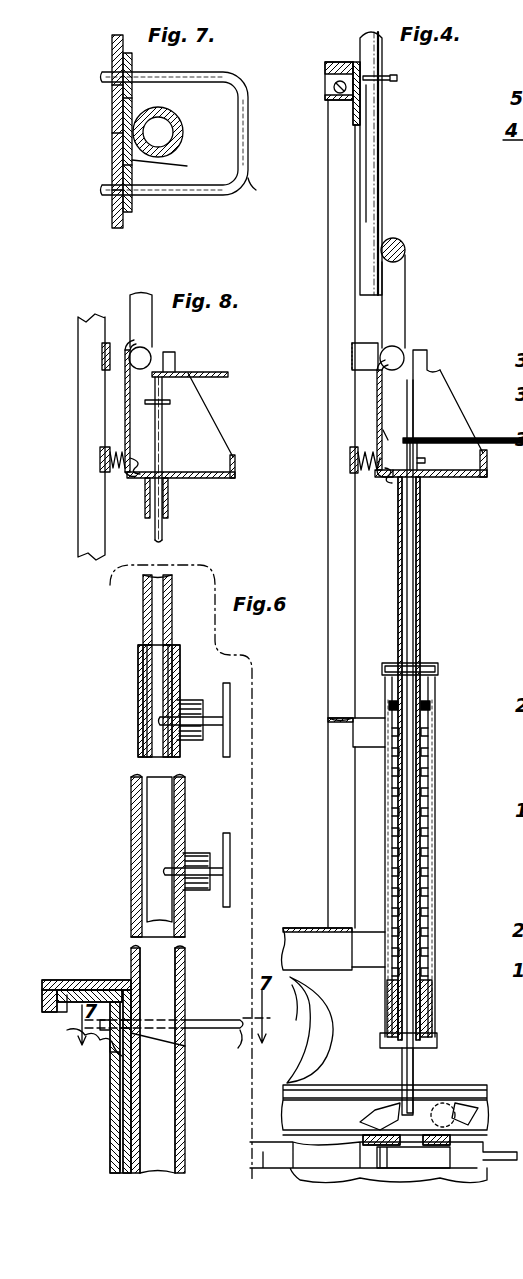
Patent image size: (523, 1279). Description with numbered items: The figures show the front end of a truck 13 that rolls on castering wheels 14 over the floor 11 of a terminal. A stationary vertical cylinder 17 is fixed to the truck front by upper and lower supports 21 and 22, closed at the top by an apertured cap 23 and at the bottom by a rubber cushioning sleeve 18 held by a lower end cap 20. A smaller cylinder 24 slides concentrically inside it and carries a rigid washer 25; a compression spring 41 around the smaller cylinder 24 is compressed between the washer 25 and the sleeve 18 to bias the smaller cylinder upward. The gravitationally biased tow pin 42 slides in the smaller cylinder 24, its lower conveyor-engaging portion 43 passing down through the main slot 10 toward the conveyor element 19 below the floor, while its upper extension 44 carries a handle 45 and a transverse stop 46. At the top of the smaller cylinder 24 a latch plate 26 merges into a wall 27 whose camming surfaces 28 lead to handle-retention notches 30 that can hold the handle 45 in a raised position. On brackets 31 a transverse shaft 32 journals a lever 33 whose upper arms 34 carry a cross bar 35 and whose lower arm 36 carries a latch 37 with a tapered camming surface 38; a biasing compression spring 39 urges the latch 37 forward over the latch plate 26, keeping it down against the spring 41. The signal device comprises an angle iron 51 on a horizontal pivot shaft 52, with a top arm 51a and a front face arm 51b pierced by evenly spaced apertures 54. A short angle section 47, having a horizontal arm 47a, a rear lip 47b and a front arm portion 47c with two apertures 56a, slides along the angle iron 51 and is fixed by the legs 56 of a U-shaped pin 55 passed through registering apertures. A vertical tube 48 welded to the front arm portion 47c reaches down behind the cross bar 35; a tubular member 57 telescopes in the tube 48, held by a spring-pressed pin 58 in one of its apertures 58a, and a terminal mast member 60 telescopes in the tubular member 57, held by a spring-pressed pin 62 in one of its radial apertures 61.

In FIG. 4, the main slot 10 is at (440, 1078).
In FIG. 4, the floor 11 is at (478, 1085).
In FIG. 4, the truck 13 is at (311, 926).
In FIG. 4, the castering wheels 14 is at (320, 1010).
In FIG. 4, the stationary vertical cylinder 17 is at (435, 885).
In FIG. 4, the cushioning sleeve 18 is at (435, 1010).
In FIG. 4, the cross member 19 is at (413, 1158).
In FIG. 8, the lower end cap 20 is at (214, 425).
In FIG. 4, the lower end cap 20 is at (437, 1043).
In FIG. 4, the upper support 21 is at (368, 716).
In FIG. 4, the lower support 22 is at (368, 935).
In FIG. 4, the apertured cap 23 is at (438, 670).
In FIG. 8, the smaller cylinder 24 is at (168, 502).
In FIG. 4, the smaller cylinder 24 is at (420, 600).
In FIG. 4, the rigid washer 25 is at (432, 707).
In FIG. 8, the latch plate 26 is at (228, 478).
In FIG. 4, the latch plate 26 is at (458, 478).
In FIG. 8, the wall 27 is at (235, 468).
In FIG. 4, the wall 27 is at (487, 468).
In FIG. 4, the camming surfaces 28 is at (456, 402).
In FIG. 8, the handle-retention notches 30 is at (178, 376).
In FIG. 4, the handle-retention notches 30 is at (436, 372).
In FIG. 8, the brackets 31 is at (110, 350).
In FIG. 4, the brackets 31 is at (366, 345).
In FIG. 8, the transverse shaft 32 is at (148, 355).
In FIG. 4, the transverse shaft 32 is at (400, 352).
In FIG. 8, the lever 33 is at (125, 416).
In FIG. 4, the lever 33 is at (377, 410).
In FIG. 8, the upper arms 34 is at (148, 310).
In FIG. 4, the upper arms 34 is at (402, 300).
In FIG. 4, the transverse cross bar 35 is at (405, 250).
In FIG. 4, the lower arm 36 is at (377, 432).
In FIG. 8, the latch 37 is at (128, 482).
In FIG. 4, the latch 37 is at (385, 437).
In FIG. 8, the camming surface 38 is at (138, 466).
In FIG. 4, the camming surface 38 is at (388, 480).
In FIG. 8, the biasing compression spring 39 is at (108, 470).
In FIG. 4, the biasing compression spring 39 is at (365, 475).
In FIG. 4, the compression spring 41 is at (435, 768).
In FIG. 8, the tow pin 42 is at (212, 553).
In FIG. 4, the tow pin 42 is at (465, 568).
In FIG. 4, the lower conveyor-engaging portion 43 is at (398, 1100).
In FIG. 8, the upper extension 44 is at (155, 388).
In FIG. 4, the upper extension 44 is at (418, 453).
In FIG. 8, the handle 45 is at (210, 372).
In FIG. 4, the handle 45 is at (462, 440).
In FIG. 8, the stop 46 is at (170, 402).
In FIG. 4, the stop 46 is at (425, 463).
In FIG. 7, the angle section 47 is at (187, 166).
In FIG. 6, the angle section 47 is at (115, 1085).
In FIG. 4, the angle section 47 is at (356, 93).
In FIG. 6, the horizontal arm 47a is at (65, 980).
In FIG. 6, the rear lip 47b is at (65, 1003).
In FIG. 7, the front arm portion 47c is at (132, 110).
In FIG. 6, the front arm portion 47c is at (118, 1130).
In FIG. 7, the vertical tube 48 is at (183, 133).
In FIG. 6, the vertical tube 48 is at (185, 1112).
In FIG. 4, the vertical tube 48 is at (382, 156).
In FIG. 6, the angle iron 51 is at (112, 968).
In FIG. 4, the angle iron 51 is at (340, 70).
In FIG. 6, the top arm 51a is at (85, 1030).
In FIG. 7, the front face arm 51b is at (112, 52).
In FIG. 6, the front face arm 51b is at (112, 1052).
In FIG. 4, the horizontal pivot shaft 52 is at (334, 89).
In FIG. 7, the apertures 54 is at (112, 192).
In FIG. 6, the apertures 54 is at (131, 1012).
In FIG. 7, the U-shaped pin 55 is at (256, 190).
In FIG. 6, the U-shaped pin 55 is at (238, 1048).
In FIG. 4, the U-shaped pin 55 is at (450, 89).
In FIG. 7, the legs 56 is at (195, 192).
In FIG. 6, the legs 56 is at (213, 1010).
In FIG. 7, the apertures 56a is at (132, 166).
In FIG. 6, the apertures 56a is at (198, 1048).
In FIG. 6, the tubular member 57 is at (145, 778).
In FIG. 6, the spring-pressed pin 58 is at (208, 862).
In FIG. 6, the apertures 58a is at (180, 905).
In FIG. 6, the terminal mast member 60 is at (143, 620).
In FIG. 6, the radial apertures 61 is at (176, 750).
In FIG. 6, the spring-pressed pin 62 is at (205, 716).